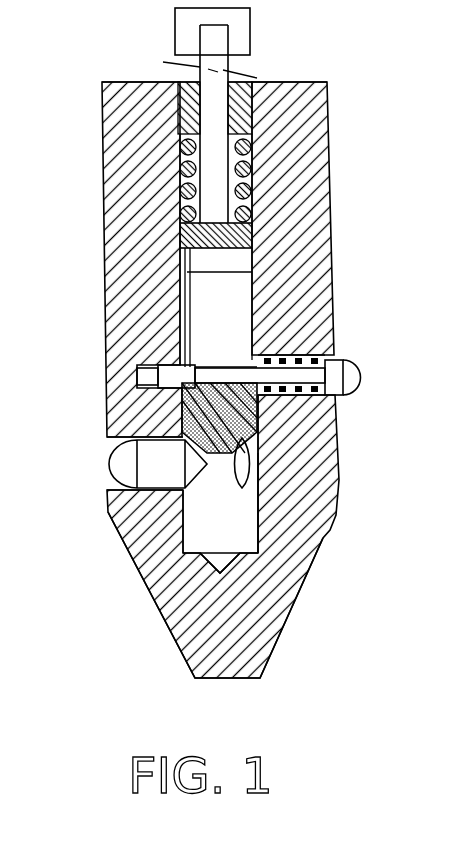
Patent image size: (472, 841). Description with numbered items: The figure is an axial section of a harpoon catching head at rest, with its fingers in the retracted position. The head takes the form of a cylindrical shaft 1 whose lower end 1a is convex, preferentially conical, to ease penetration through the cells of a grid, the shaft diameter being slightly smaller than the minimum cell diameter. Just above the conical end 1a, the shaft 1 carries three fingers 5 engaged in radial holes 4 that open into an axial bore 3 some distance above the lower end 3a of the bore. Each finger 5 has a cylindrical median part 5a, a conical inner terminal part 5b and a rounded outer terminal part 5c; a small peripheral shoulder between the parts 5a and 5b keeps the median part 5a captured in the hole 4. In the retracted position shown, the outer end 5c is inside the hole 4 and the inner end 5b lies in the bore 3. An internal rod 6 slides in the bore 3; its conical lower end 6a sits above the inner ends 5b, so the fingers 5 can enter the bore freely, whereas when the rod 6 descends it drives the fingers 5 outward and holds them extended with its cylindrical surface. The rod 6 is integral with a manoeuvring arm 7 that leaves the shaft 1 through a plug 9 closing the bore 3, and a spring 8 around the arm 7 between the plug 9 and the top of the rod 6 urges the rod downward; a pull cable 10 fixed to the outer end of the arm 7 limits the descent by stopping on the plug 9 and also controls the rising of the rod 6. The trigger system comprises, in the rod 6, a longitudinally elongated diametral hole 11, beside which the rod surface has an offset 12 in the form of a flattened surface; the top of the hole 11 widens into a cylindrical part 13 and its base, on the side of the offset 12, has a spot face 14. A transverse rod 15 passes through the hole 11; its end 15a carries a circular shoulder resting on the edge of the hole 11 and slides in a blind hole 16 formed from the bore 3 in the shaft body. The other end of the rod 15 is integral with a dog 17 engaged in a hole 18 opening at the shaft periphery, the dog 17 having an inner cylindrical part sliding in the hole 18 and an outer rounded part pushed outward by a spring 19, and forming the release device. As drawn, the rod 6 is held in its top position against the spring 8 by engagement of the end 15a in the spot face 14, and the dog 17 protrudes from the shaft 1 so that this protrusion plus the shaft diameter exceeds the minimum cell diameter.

The cylindrical shaft 1 is at (372, 125).
The lower end 1a is at (280, 640).
The axial bore 3 is at (250, 527).
The lower end of the bore 3a is at (185, 553).
The radial holes 4 is at (110, 440).
The fingers 5 is at (95, 482).
The cylindrical median part 5a is at (163, 472).
The inner terminal part 5b is at (210, 480).
The outer terminal part 5c is at (117, 463).
The internal rod 6 is at (183, 243).
The lower end of the rod 6a is at (285, 440).
The manoeuvring arm 7 is at (218, 180).
The spring 8 is at (183, 190).
The plug 9 is at (188, 82).
The pull cable 10 is at (247, 40).
The hole 11 is at (332, 270).
The offset 12 is at (150, 318).
The cylindrical part 13 is at (202, 263).
The spot face 14 is at (257, 323).
The transverse rod 15 is at (280, 377).
The end of the transverse rod 15a is at (137, 380).
The blind hole 16 is at (150, 372).
The dog 17 is at (357, 375).
The hole 18 is at (308, 397).
The spring 19 is at (300, 357).